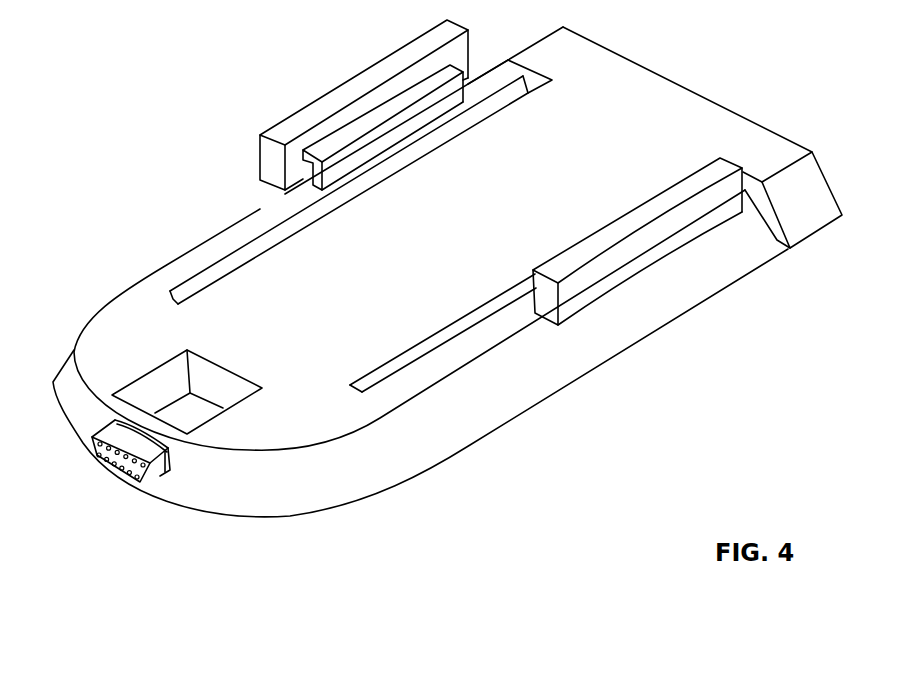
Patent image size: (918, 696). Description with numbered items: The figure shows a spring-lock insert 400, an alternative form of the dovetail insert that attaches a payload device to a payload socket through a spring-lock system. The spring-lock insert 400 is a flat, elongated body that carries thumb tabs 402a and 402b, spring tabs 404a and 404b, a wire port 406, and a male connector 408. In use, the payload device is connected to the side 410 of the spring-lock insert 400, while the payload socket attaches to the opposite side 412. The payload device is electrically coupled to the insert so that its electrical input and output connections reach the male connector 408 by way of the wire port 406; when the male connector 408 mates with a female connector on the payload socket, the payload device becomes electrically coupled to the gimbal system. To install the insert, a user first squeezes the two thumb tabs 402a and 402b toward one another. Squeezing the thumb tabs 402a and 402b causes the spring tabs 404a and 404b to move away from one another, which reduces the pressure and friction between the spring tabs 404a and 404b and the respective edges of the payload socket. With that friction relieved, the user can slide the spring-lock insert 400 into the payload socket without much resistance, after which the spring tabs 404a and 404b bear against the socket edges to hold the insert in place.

The spring-lock insert 400 is at (137, 54).
The thumb tab 402a is at (373, 78).
The thumb tab 402b is at (697, 180).
The spring tab 404a is at (222, 240).
The spring tab 404b is at (498, 334).
The wire port 406 is at (153, 383).
The male connector 408 is at (117, 473).
The side 410 is at (743, 127).
The side 412 is at (778, 262).